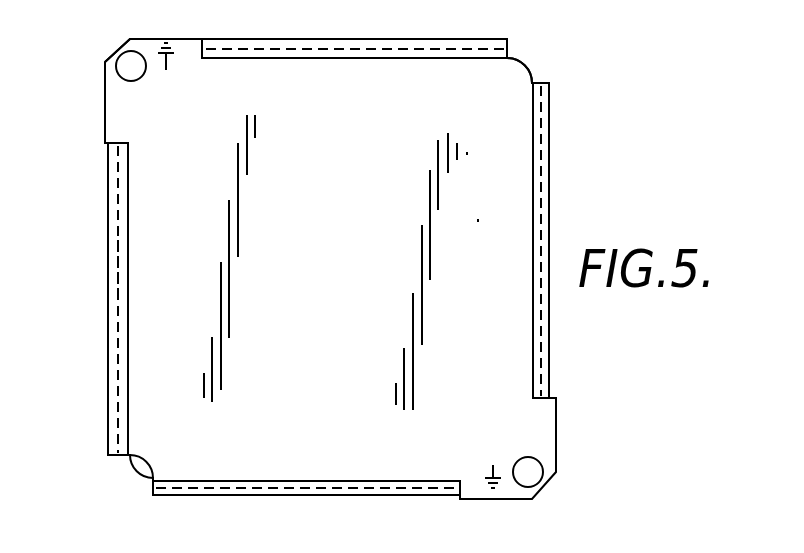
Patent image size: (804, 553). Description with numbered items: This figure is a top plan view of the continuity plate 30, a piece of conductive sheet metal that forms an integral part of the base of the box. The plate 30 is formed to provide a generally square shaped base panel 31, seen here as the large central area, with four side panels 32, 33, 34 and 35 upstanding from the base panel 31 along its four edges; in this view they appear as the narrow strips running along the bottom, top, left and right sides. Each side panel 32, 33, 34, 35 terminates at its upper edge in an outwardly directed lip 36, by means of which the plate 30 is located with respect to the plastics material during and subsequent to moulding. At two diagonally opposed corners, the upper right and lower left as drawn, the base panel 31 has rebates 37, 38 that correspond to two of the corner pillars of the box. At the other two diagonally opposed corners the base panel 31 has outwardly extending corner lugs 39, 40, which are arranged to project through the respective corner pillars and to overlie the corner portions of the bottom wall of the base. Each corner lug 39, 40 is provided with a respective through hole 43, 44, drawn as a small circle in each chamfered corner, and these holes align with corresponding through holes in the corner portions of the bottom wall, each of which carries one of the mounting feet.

The continuity plate 30 is at (478, 220).
The base panel 31 is at (360, 85).
The side panel 32 is at (322, 485).
The side panel 33 is at (326, 40).
The side panel 34 is at (112, 368).
The side panel 35 is at (547, 355).
The outwardly directed lip 36 is at (118, 268).
The rebate 37 is at (140, 458).
The rebate 38 is at (520, 72).
The corner lug 39 is at (538, 433).
The corner lug 40 is at (145, 40).
The through hole 43 is at (538, 480).
The through hole 44 is at (118, 72).